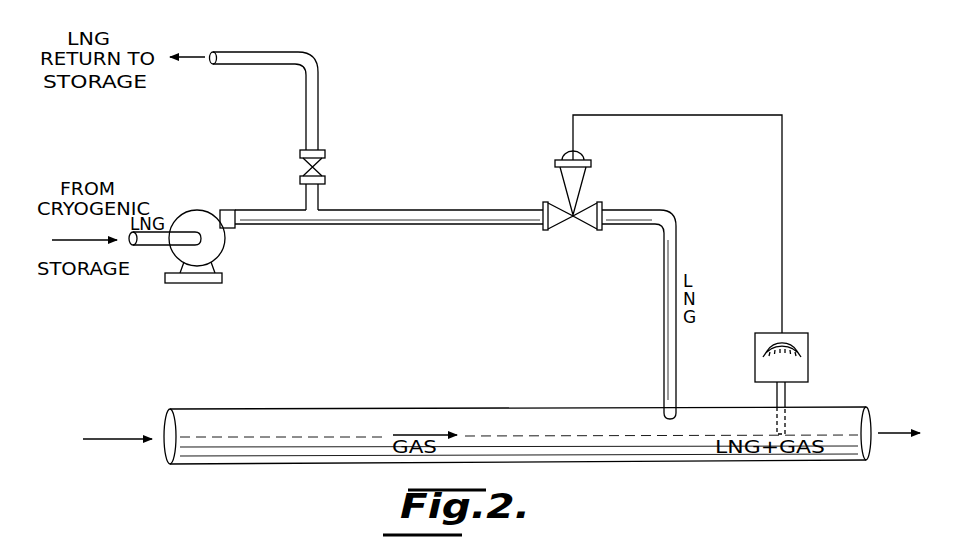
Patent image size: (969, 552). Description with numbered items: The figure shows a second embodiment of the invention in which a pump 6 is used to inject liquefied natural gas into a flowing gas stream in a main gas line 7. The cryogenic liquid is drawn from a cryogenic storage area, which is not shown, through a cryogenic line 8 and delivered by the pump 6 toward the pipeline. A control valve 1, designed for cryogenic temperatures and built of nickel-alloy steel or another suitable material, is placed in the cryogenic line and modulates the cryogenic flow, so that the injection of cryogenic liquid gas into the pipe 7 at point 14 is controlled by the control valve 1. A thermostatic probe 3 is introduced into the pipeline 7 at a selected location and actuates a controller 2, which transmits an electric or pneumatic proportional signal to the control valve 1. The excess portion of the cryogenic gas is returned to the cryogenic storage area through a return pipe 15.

The control valve 1 is at (576, 186).
The controller 2 is at (809, 361).
The thermostatic probe 3 is at (791, 421).
The pump 6 is at (213, 241).
The main gas line 7 is at (845, 407).
The cryogenic line 8 is at (143, 247).
The injection point 14 is at (661, 403).
The return pipe 15 is at (318, 96).